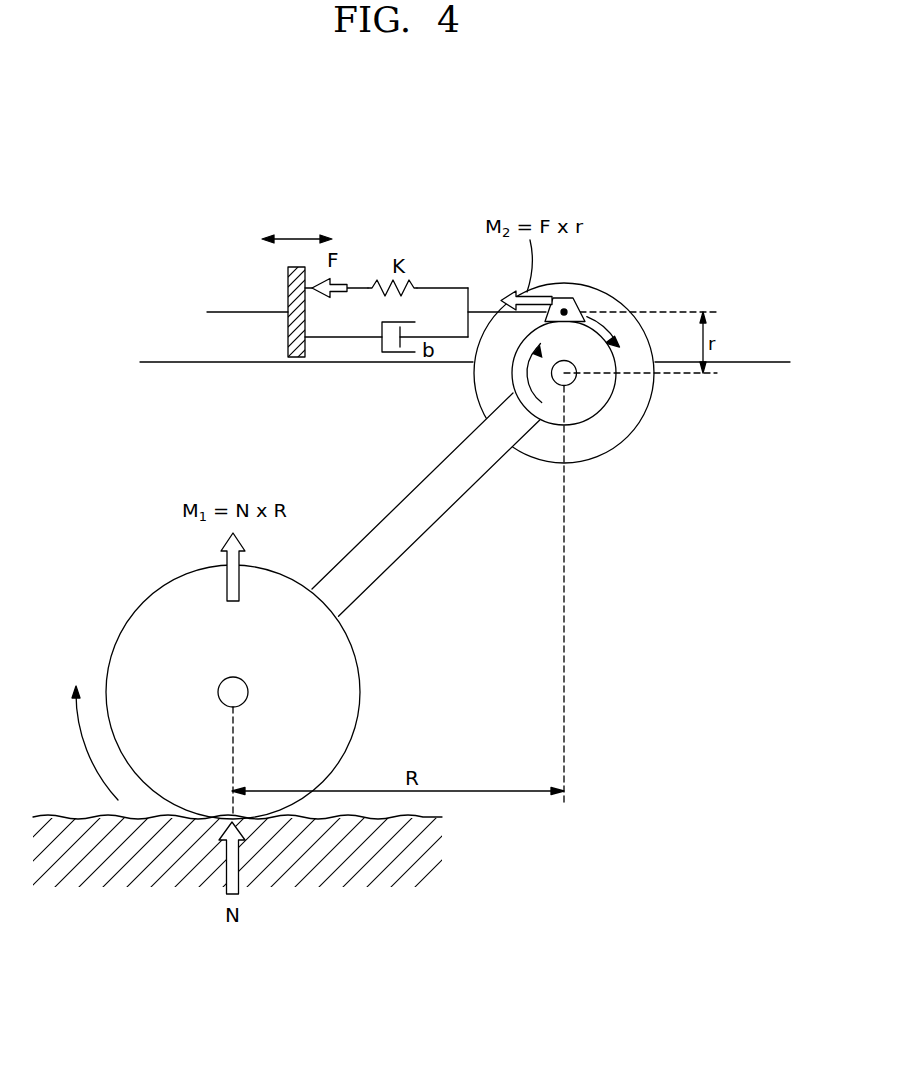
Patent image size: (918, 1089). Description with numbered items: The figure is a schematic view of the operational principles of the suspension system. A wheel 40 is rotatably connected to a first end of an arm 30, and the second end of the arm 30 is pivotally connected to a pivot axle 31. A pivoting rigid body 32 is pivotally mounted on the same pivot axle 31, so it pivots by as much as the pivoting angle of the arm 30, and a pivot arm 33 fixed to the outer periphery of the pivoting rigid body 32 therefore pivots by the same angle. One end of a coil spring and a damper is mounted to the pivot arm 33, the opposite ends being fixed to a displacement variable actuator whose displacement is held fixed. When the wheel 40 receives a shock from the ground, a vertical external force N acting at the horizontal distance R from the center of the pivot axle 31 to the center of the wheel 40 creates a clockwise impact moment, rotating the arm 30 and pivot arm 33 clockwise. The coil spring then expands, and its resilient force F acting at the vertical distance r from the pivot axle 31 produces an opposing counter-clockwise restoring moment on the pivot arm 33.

The arm 30 is at (413, 497).
The pivot axle 31 is at (575, 382).
The pivoting rigid body 32 is at (600, 443).
The pivot arm 33 is at (575, 300).
The wheel 40 is at (145, 630).